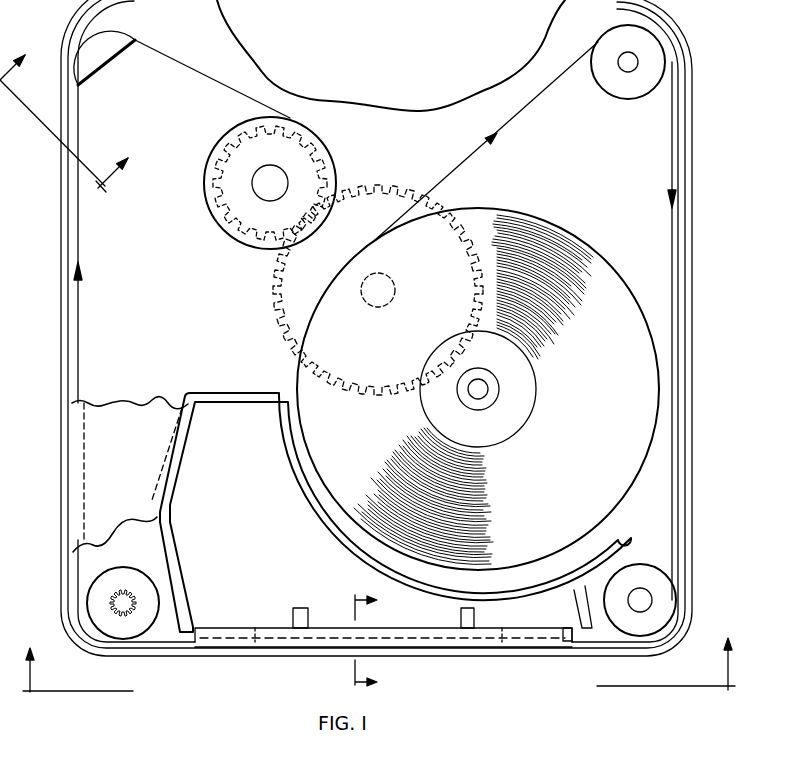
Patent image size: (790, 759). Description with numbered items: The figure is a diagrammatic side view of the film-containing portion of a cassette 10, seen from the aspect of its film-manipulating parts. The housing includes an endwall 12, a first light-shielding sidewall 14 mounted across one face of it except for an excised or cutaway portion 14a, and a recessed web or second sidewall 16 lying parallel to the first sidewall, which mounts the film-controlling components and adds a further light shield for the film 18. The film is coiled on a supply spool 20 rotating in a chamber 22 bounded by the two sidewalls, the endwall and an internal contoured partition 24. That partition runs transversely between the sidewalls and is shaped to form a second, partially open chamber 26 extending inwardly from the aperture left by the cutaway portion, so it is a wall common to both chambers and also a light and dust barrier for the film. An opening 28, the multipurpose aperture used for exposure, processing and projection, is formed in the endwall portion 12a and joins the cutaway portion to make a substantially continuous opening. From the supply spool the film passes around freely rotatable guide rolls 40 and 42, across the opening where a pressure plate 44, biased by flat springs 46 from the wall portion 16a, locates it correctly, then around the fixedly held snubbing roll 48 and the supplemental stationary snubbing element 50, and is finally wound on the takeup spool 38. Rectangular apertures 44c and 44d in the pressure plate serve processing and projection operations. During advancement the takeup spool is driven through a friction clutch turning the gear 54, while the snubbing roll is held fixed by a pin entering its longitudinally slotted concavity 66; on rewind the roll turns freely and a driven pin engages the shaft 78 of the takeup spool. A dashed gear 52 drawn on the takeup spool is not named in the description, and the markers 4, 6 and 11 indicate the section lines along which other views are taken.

The section line 4- 4 is at (378, 652).
The section line 6- 6 is at (375, 641).
The cassette 10 is at (706, 306).
The section line 11- 11 is at (74, 116).
The endwall 12 is at (692, 438).
The endwall portion 12a is at (665, 677).
The first light-shielding sidewall 14 is at (62, 472).
The excised or cutaway portion 14a is at (228, 455).
The recessed web or second sidewall 16 is at (204, 284).
The wall portion 16a is at (255, 538).
The film 18 is at (572, 479).
The supply spool 20 is at (536, 388).
The chamber 22 is at (628, 201).
The internal contoured wall or partition 24 is at (312, 528).
The cavity or second partially open chamber 26 is at (218, 595).
The opening 28 is at (563, 645).
The takeup spool 38 is at (335, 166).
The guide roll 40 is at (611, 99).
The guide roll 42 is at (645, 565).
The pressure plate 44 is at (447, 632).
The rectangular aperture 44c is at (510, 640).
The rectangular aperture 44d is at (275, 680).
The flat springs 46 is at (302, 608).
The snubbing roll 48 is at (150, 572).
The supplemental stationary snubbing element 50 is at (115, 57).
The drive gear 52 is at (212, 205).
The gear 54 is at (285, 322).
The longitudinally slotted concavity 66 is at (126, 594).
The shaft 78 is at (494, 402).